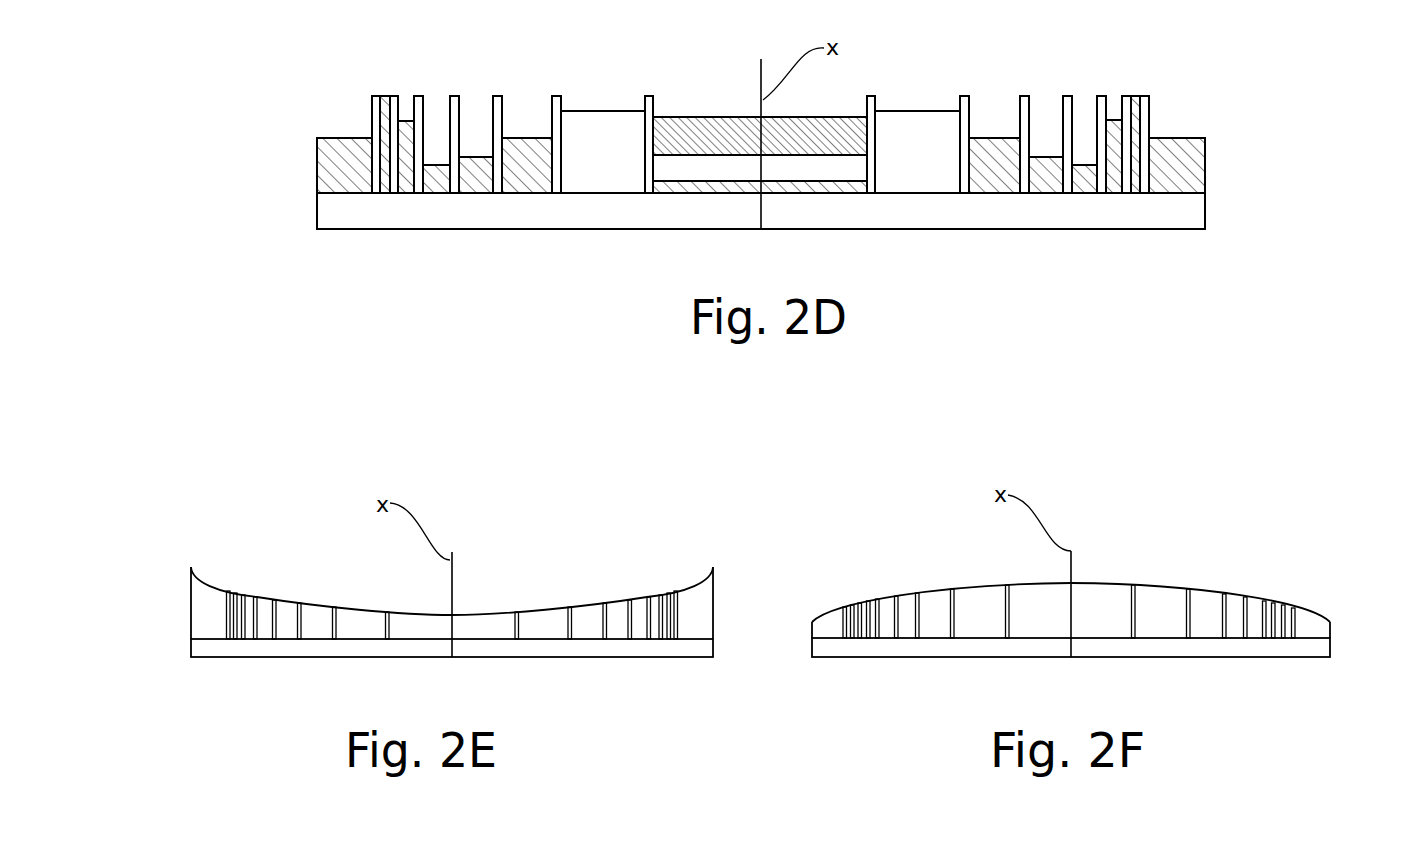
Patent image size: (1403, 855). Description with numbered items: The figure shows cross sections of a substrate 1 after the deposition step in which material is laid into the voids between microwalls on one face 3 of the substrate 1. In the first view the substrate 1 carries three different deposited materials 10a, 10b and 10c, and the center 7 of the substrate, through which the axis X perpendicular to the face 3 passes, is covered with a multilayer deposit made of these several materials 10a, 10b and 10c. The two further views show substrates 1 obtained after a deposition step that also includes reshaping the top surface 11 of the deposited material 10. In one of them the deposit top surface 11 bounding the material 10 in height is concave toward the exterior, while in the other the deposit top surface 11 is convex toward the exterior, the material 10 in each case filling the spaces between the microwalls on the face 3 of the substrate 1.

In FIG. 2D, the substrate 1 is at (1027, 214).
In FIG. 2E, the substrate 1 is at (662, 645).
In FIG. 2F, the substrate 1 is at (902, 647).
In FIG. 2D, the face 3 is at (1205, 180).
In FIG. 2E, the face 3 is at (207, 637).
In FIG. 2F, the face 3 is at (1320, 637).
In FIG. 2D, the center 7 is at (757, 193).
In FIG. 2E, the material 10 is at (493, 623).
In FIG. 2F, the material 10 is at (1090, 598).
In FIG. 2D, the first deposited material 10a is at (1178, 138).
In FIG. 2D, the second deposited material 10b is at (895, 135).
In FIG. 2D, the third deposited material 10c is at (723, 121).
In FIG. 2E, the deposit top surface 11 is at (357, 607).
In FIG. 2F, the deposit top surface 11 is at (977, 585).